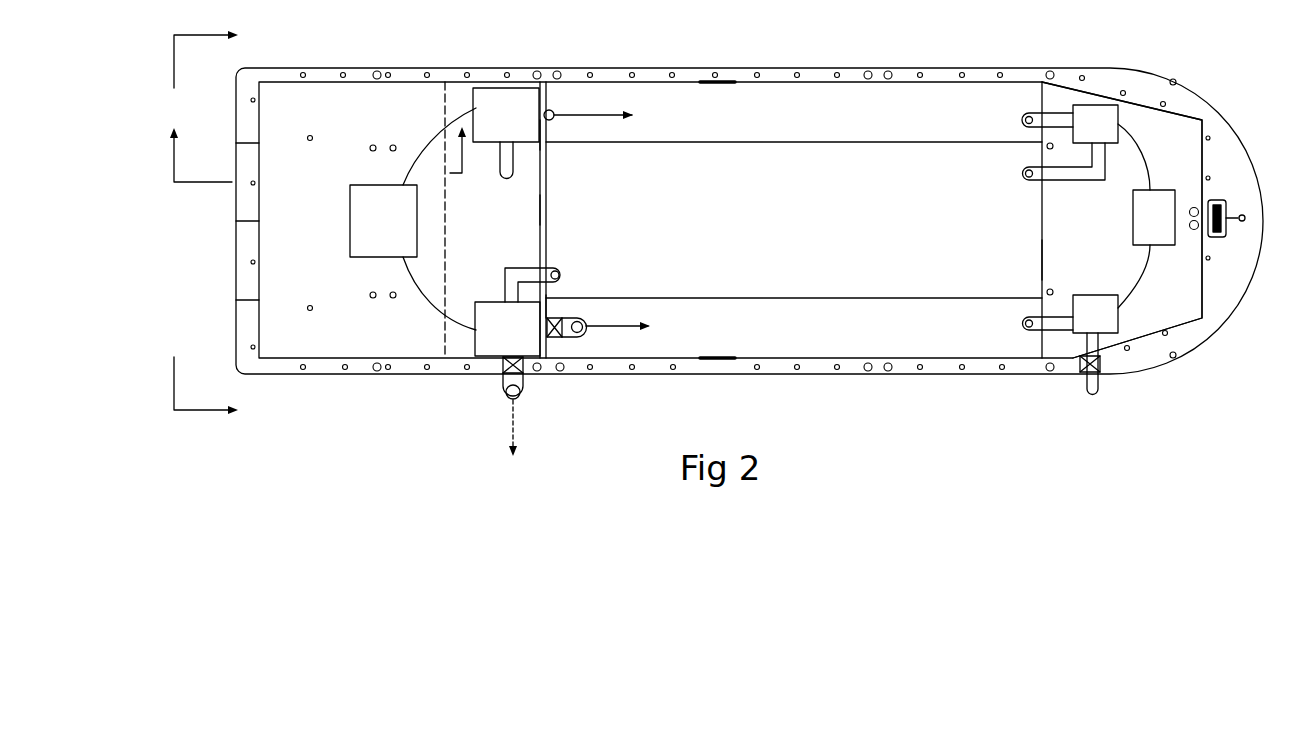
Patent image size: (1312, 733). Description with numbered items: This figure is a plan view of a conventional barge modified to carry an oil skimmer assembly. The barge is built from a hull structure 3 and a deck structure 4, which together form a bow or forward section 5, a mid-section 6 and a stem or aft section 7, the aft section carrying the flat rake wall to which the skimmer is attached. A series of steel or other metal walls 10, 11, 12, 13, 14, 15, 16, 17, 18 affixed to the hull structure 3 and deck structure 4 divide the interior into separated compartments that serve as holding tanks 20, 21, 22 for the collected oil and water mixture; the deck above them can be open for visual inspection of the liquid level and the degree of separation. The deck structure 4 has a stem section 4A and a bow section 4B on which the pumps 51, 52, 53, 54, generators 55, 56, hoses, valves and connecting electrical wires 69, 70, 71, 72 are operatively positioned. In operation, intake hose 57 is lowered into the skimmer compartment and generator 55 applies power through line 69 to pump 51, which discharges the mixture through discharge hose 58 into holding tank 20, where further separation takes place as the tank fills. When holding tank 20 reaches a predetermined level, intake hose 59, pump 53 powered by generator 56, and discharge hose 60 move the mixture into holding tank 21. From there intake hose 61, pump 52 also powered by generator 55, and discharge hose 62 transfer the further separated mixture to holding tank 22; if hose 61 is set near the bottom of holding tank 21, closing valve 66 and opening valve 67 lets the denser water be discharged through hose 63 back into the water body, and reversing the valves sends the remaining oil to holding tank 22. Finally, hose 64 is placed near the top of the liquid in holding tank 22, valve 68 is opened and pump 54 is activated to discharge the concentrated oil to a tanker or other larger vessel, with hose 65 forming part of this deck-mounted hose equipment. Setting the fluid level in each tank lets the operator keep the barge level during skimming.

The hull structure 3 is at (206, 223).
The bow or forward section 5 is at (1263, 98).
The deck structure 4 is at (547, 133).
The stem section of deck structure 4A is at (393, 103).
The bow section of deck structure 4B is at (1184, 169).
The mid-section 6 is at (802, 68).
The stem or aft section 7 is at (343, 377).
The metal wall 10 is at (723, 84).
The metal wall 11 is at (837, 142).
The metal wall 12 is at (903, 300).
The metal wall 13 is at (727, 358).
The metal wall 14 is at (548, 90).
The metal wall 15 is at (1040, 94).
The metal wall 16 is at (550, 208).
The metal wall 17 is at (1040, 263).
The metal wall 18 is at (563, 310).
The holding tank 20 is at (766, 124).
The holding tank 21 is at (766, 226).
The holding tank 22 is at (766, 339).
The pump 51 is at (495, 130).
The pump 52 is at (495, 334).
The pump 53 is at (1084, 136).
The pump 54 is at (1084, 325).
The generator 55 is at (371, 234).
The generator 56 is at (1142, 230).
The intake hose 57 is at (515, 162).
The discharge hose 58 is at (552, 110).
The intake hose 59 is at (1052, 110).
The discharge hose 60 is at (1066, 186).
The intake hose 61 is at (557, 266).
The discharge hose 62 is at (587, 320).
The hose 63 is at (525, 388).
The hose 64 is at (1037, 329).
The hose 65 is at (1085, 387).
The valve 66 is at (553, 337).
The valve 67 is at (503, 367).
The valve 68 is at (1090, 360).
The connecting electrical wire 69 is at (430, 140).
The connecting electrical wire 70 is at (430, 303).
The connecting electrical wire 71 is at (1142, 154).
The connecting electrical wire 72 is at (1140, 283).